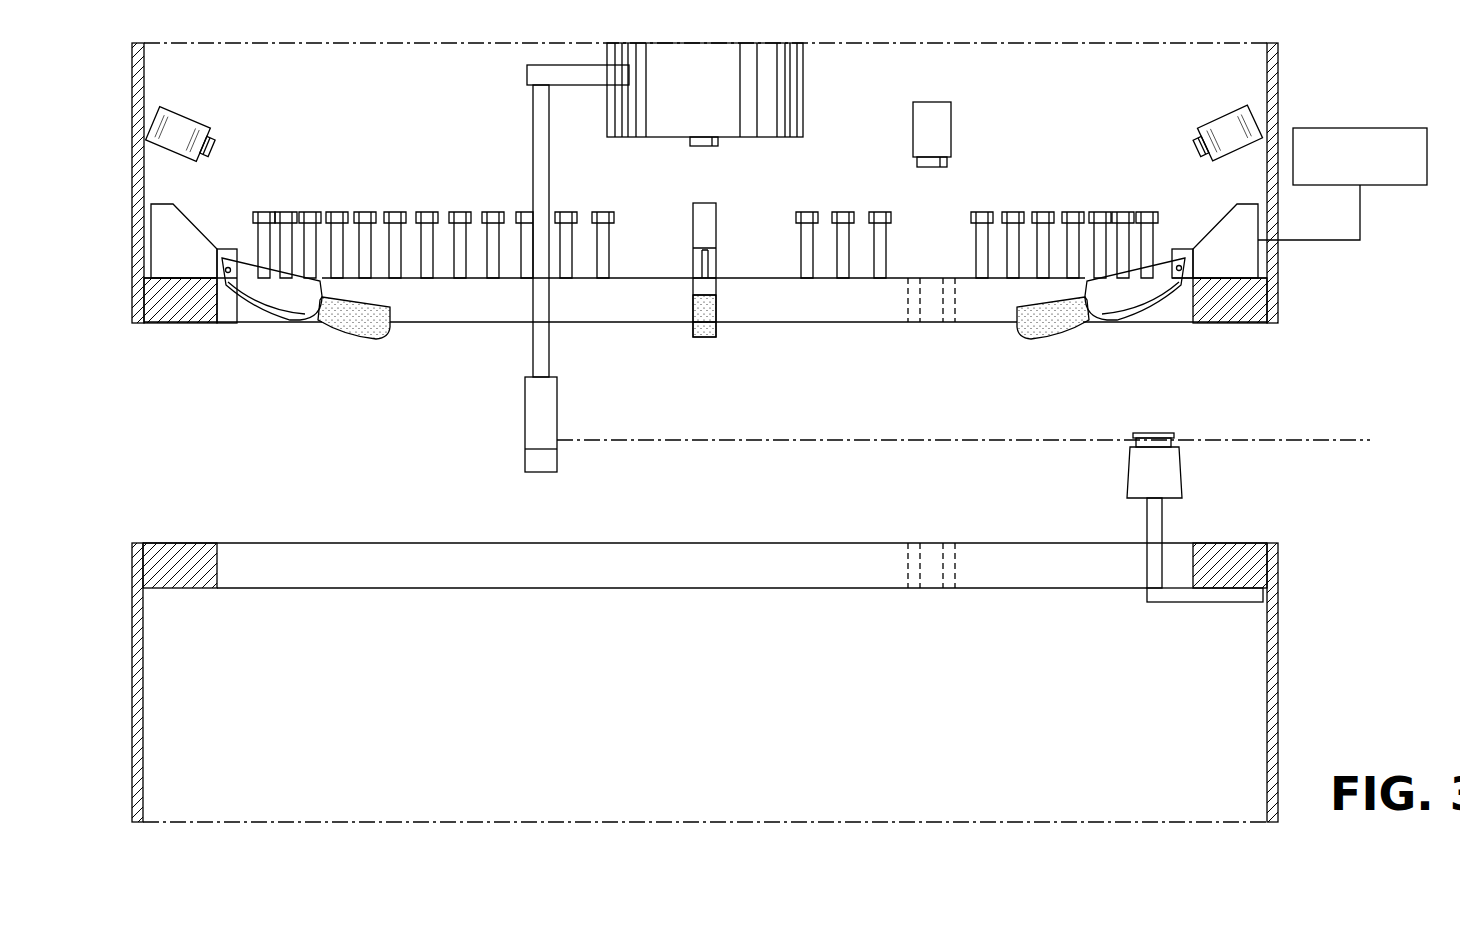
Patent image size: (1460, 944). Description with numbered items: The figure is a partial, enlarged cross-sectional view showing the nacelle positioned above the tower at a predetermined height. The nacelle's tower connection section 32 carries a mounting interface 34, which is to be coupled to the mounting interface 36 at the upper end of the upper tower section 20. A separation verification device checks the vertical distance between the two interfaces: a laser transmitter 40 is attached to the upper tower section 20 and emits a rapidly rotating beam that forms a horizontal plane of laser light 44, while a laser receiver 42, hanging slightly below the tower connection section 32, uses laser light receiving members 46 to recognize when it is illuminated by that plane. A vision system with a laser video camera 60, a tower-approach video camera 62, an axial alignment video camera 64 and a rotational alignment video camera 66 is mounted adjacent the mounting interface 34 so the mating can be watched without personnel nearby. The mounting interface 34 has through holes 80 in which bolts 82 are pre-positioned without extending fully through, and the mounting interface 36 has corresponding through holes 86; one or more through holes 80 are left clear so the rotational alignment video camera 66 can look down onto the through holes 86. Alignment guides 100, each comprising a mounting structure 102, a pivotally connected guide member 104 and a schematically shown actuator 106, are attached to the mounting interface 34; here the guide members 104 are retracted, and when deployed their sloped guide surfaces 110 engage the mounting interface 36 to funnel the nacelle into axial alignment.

The upper tower section 20 is at (132, 696).
The tower connection section 32 is at (132, 186).
The mounting interface 34 is at (186, 323).
The mounting interface 36 is at (182, 543).
The laser transmitter 40 is at (1182, 470).
The laser receiver 42 is at (520, 418).
The horizontal plane of laser light 44 is at (828, 440).
The laser light receiving members 46 is at (525, 462).
The laser video camera 60 is at (1228, 110).
The tower-approach video camera 62 is at (185, 110).
The axial alignment video camera 64 is at (718, 145).
The rotational alignment video camera 66 is at (951, 130).
The through holes 80 is at (908, 306).
The bolts 82 is at (397, 212).
The through holes 86 is at (908, 574).
The alignment guides 100 is at (205, 218).
The mounting structure 102 is at (192, 212).
The guide member 104 is at (327, 330).
The actuator 106 is at (1400, 128).
The guide surface 110 is at (348, 335).